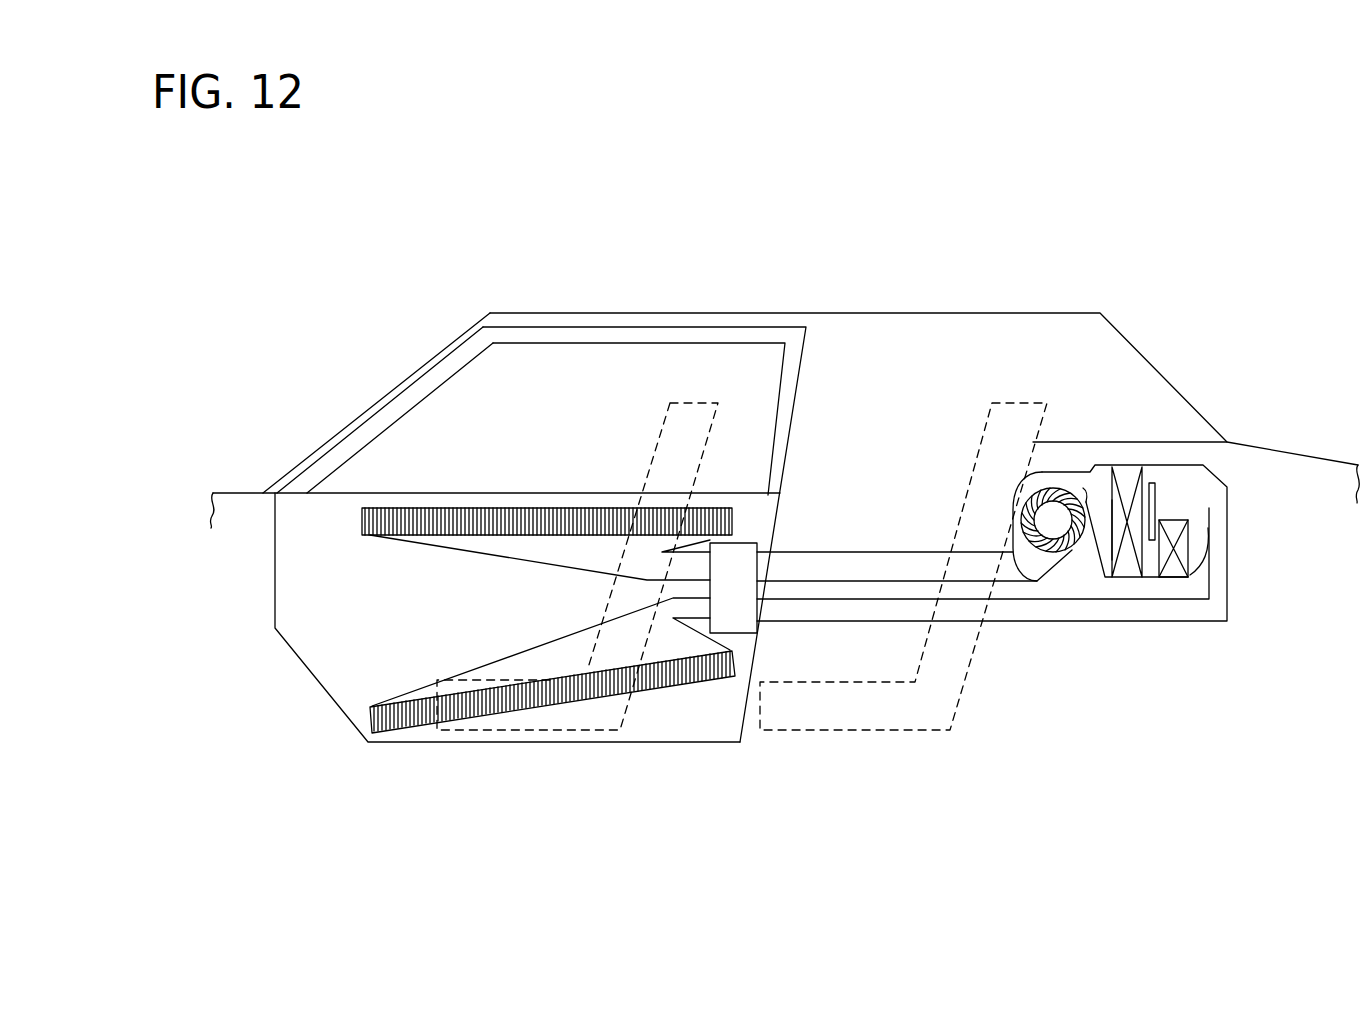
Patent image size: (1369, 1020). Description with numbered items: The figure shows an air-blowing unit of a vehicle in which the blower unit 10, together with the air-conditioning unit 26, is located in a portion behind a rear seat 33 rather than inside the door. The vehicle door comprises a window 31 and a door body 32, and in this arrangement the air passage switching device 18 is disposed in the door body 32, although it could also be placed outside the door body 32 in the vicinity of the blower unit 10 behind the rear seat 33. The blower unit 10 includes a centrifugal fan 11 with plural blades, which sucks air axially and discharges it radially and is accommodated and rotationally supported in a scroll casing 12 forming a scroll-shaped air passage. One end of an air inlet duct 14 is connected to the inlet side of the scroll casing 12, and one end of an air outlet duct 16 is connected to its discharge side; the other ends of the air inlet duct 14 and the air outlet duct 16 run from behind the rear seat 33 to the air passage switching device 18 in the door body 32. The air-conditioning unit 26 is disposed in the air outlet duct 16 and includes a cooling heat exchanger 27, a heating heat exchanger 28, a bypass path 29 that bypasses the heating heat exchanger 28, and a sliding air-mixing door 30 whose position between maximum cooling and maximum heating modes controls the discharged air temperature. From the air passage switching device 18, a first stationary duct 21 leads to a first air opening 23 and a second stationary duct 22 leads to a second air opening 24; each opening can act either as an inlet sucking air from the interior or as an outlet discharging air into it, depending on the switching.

The blower unit 10 is at (1063, 467).
The fan 11 is at (1065, 493).
The scroll casing 12 is at (1045, 557).
The air inlet duct 14 is at (905, 552).
The air outlet duct 16 is at (1057, 612).
The air passage switching device 18 is at (746, 543).
The first stationary duct 21 is at (530, 552).
The second stationary duct 22 is at (553, 653).
The first air opening 23 is at (467, 522).
The second air opening 24 is at (523, 705).
The air-conditioning unit 26 is at (1165, 466).
The cooling heat exchanger 27 is at (1126, 563).
The heating heat exchanger 28 is at (1172, 570).
The bypass path 29 is at (1180, 502).
The air-mixing door 30 is at (1148, 567).
The window 31 is at (567, 387).
The door body 32 is at (317, 548).
The rear seat 33 is at (1017, 403).